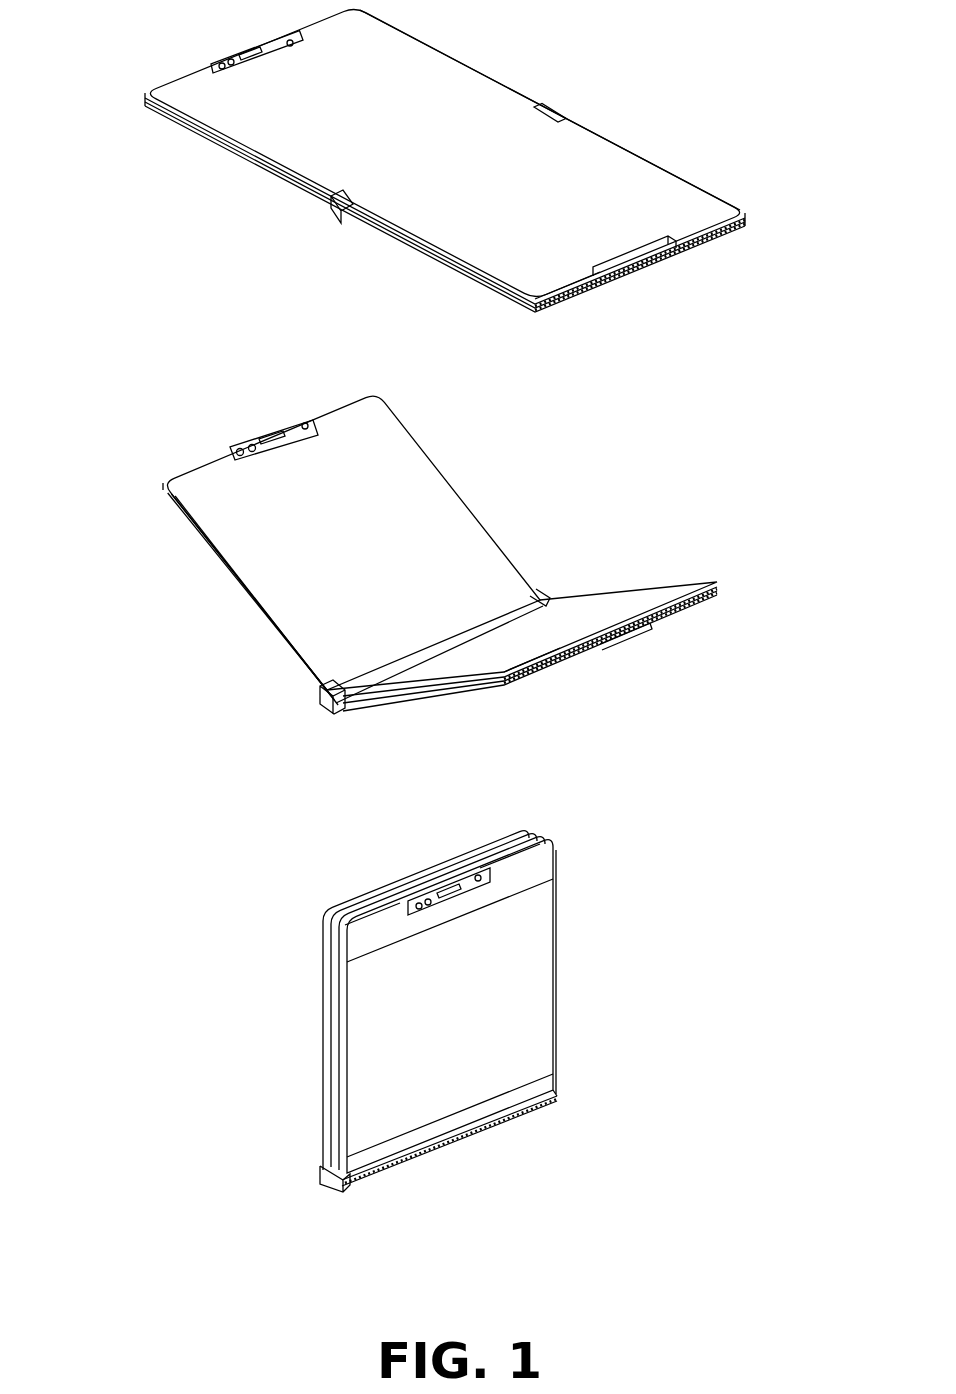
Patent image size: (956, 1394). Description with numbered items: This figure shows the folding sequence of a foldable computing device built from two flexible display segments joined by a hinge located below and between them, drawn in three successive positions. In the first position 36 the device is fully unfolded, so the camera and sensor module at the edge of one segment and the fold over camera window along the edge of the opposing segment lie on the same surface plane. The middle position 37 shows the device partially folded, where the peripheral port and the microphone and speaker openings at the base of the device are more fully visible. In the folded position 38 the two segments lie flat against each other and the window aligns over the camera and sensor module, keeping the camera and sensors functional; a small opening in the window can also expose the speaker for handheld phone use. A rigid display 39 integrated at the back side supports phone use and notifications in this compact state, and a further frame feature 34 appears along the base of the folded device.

The fourth frame portion 34 is at (503, 1110).
The first position 36 is at (578, 98).
The middle position 37 is at (598, 545).
The folded position 38 is at (607, 916).
The rigid display 39 is at (556, 887).